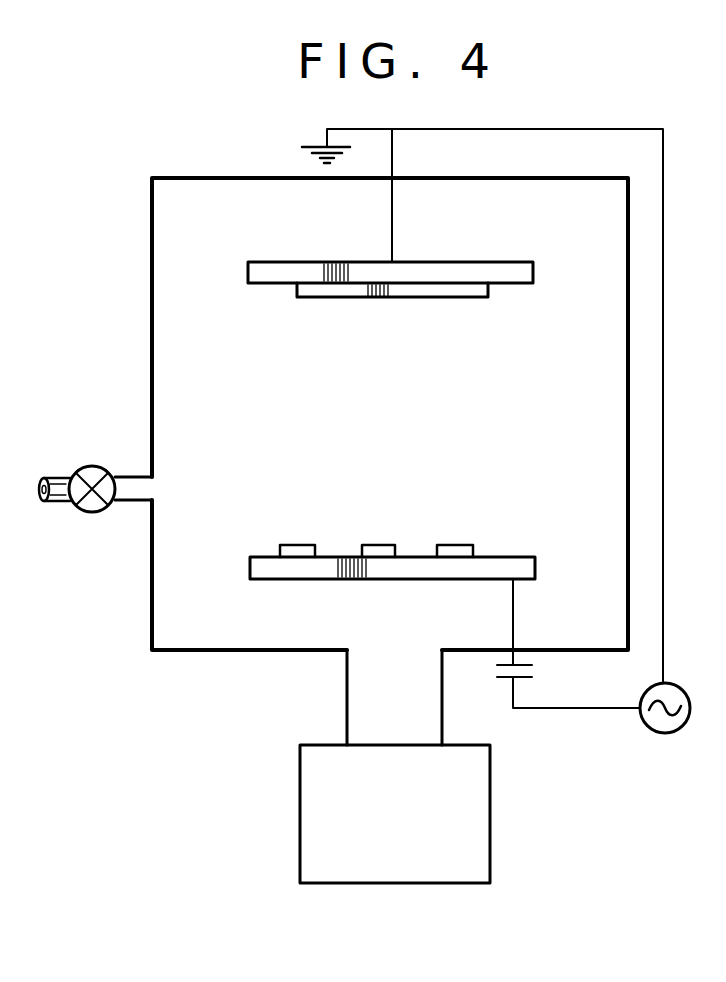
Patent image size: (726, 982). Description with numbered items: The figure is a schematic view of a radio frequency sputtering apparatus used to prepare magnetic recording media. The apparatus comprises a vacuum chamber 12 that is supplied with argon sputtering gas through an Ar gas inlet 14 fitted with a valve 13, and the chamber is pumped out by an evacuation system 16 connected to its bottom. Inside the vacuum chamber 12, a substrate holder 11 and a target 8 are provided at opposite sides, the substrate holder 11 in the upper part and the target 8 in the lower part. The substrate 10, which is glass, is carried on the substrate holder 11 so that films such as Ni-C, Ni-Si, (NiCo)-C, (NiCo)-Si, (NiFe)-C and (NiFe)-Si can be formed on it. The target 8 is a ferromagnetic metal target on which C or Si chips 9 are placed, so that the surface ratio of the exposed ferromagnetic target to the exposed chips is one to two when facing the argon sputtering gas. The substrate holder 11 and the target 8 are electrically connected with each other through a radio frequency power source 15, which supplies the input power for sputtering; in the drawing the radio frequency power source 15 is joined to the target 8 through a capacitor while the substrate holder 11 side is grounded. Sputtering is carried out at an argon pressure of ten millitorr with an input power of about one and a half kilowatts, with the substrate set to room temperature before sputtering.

The target 8 is at (287, 580).
The C or Si chips 9 is at (297, 545).
The substrate 10 is at (463, 298).
The substrate holder 11 is at (494, 267).
The vacuum chamber 12 is at (152, 335).
The valve 13 is at (90, 512).
The Ar gas inlet 14 is at (57, 477).
The radio frequency power source 15 is at (665, 733).
The evacuation system 16 is at (490, 810).